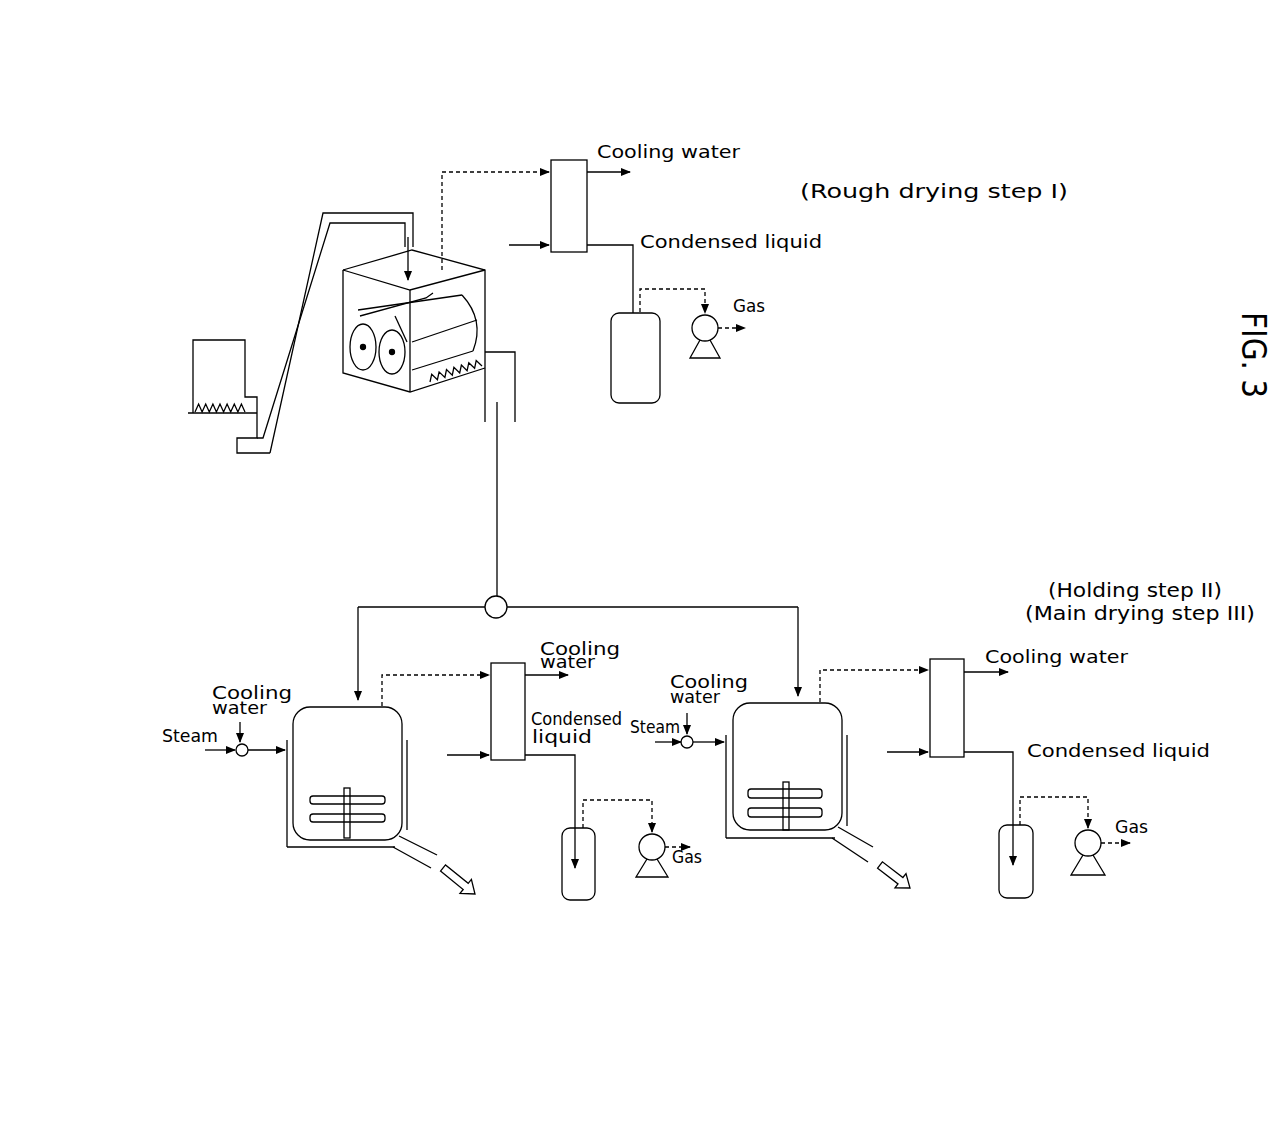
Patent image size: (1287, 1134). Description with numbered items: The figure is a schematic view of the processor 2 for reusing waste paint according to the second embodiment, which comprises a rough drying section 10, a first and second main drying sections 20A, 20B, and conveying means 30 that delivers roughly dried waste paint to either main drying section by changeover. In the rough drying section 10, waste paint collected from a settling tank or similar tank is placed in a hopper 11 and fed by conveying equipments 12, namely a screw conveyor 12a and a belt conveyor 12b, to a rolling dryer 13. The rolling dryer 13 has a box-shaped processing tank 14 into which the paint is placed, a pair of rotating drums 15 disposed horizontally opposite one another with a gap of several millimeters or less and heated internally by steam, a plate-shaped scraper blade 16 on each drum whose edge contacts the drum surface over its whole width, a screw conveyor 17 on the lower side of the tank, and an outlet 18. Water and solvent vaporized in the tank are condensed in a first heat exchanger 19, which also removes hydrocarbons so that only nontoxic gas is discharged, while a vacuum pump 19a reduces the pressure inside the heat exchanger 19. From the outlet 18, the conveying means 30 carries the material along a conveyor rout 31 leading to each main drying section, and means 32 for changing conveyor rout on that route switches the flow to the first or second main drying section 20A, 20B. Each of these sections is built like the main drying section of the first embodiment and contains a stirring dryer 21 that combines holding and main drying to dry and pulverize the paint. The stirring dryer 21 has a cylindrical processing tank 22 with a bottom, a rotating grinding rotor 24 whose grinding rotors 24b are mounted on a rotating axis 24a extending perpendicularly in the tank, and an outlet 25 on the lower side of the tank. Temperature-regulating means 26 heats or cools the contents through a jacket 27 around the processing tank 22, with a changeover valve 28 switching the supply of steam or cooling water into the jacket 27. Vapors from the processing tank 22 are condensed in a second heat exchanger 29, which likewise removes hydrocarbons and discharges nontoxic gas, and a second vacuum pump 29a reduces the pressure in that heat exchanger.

The processor 2 is at (850, 353).
The rough drying section 10 is at (263, 218).
The hopper 11 is at (207, 355).
The conveying equipments 12 is at (306, 266).
The screw conveyor 12a is at (210, 417).
The belt conveyor 12b is at (288, 340).
The rolling dryer 13 is at (427, 217).
The processing tank 14 is at (487, 302).
The rotating drums 15 is at (357, 373).
The scraper blade 16 is at (360, 313).
The screw conveyor 17 is at (433, 378).
The outlet 18 is at (508, 387).
The first heat exchanger 19 is at (575, 152).
The vacuum pump 19a is at (630, 398).
The first main drying section 20A is at (263, 660).
The second main drying section 20B is at (808, 670).
The stirring dryer 21 is at (330, 702).
The processing tank 22 is at (285, 770).
The rotating grinding rotor 24 is at (360, 830).
The rotating axis 24a is at (342, 828).
The grinding rotors 24b is at (312, 800).
The outlet 25 is at (418, 855).
The temperature-regulating means 26 is at (197, 705).
The jacket 27 is at (295, 840).
The changeover valve 28 is at (236, 755).
The second heat exchanger 29 is at (511, 660).
The second vacuum pump 29a is at (583, 892).
The conveying means 30 is at (502, 487).
The conveyor rout 31 is at (500, 527).
The means for changing conveyor rout 32 is at (488, 597).